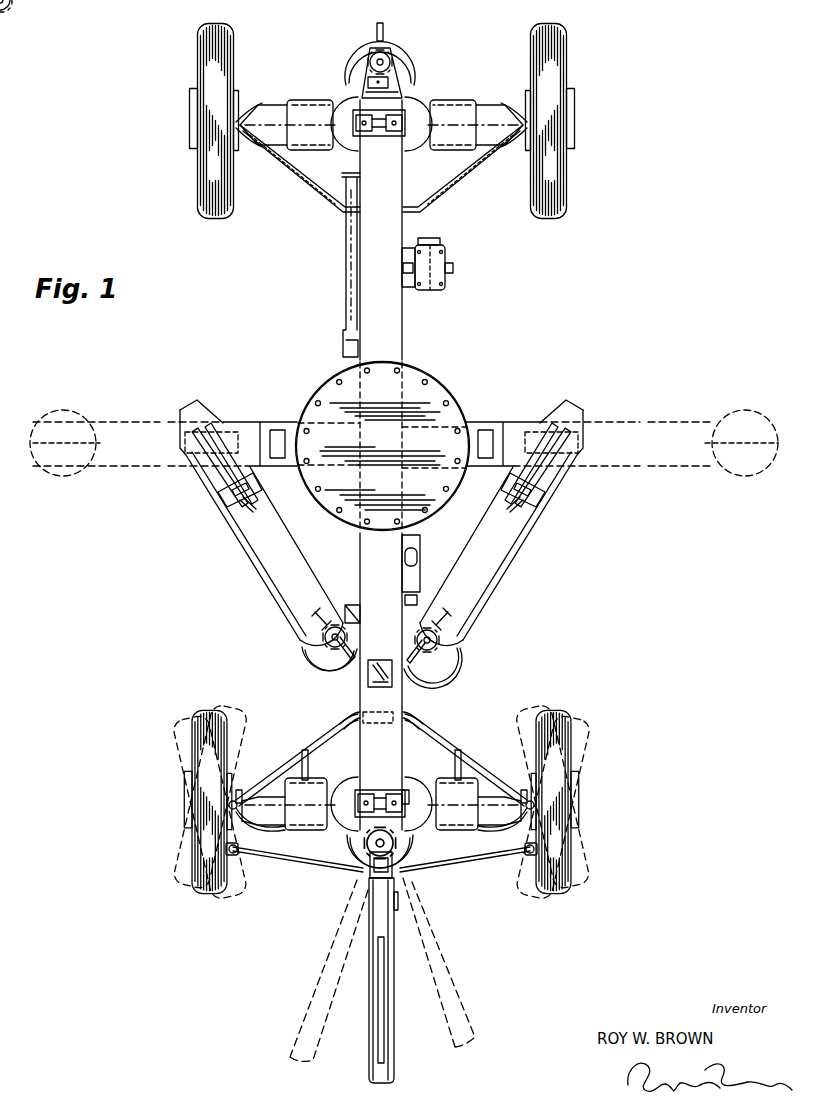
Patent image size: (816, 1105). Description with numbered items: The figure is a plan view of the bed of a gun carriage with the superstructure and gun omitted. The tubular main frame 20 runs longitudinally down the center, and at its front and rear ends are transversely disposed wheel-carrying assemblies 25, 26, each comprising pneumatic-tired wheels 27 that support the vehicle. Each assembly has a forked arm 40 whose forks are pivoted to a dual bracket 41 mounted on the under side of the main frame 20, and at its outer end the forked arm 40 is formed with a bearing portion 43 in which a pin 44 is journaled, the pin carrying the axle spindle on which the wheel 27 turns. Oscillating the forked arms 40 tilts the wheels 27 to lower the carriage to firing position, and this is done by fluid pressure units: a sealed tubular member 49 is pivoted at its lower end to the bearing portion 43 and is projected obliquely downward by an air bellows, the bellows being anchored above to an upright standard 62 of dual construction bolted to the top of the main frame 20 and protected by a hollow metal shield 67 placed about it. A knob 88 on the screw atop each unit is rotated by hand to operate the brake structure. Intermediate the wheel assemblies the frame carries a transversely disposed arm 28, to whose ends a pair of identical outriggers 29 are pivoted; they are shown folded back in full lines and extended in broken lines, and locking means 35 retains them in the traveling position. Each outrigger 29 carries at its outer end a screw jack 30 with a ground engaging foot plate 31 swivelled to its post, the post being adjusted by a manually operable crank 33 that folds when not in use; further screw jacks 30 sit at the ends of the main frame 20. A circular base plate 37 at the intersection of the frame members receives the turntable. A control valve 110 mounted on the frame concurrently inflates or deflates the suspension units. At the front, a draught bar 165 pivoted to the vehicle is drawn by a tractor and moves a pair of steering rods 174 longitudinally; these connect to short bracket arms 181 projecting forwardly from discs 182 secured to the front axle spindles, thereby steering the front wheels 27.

The main frame 20 is at (398, 326).
The front wheel-carrying assembly 25 is at (290, 752).
The rear wheel-carrying assembly 26 is at (303, 190).
The wheel 27 is at (192, 145).
The transversely disposed arm 28 is at (488, 424).
The outrigger 29 is at (257, 538).
The screw jack 30 is at (393, 63).
The ground engaging foot plate 31 is at (410, 47).
The manually operable crank 33 is at (325, 672).
The locking means 35 is at (345, 607).
The circular base plate 37 is at (320, 398).
The forked arm 40 is at (343, 727).
The bracket 41 is at (362, 708).
The bearing portion 43 is at (247, 818).
The pin 44 is at (238, 792).
The tubular member 49 is at (258, 102).
The upright standard 62 is at (380, 137).
The shield 67 is at (308, 137).
The knob 88 is at (402, 95).
The control valve 110 is at (394, 686).
The draught bar 165 is at (368, 1058).
The steering rod 174 is at (280, 863).
The short bracket arm 181 is at (250, 858).
The disc 182 is at (244, 735).